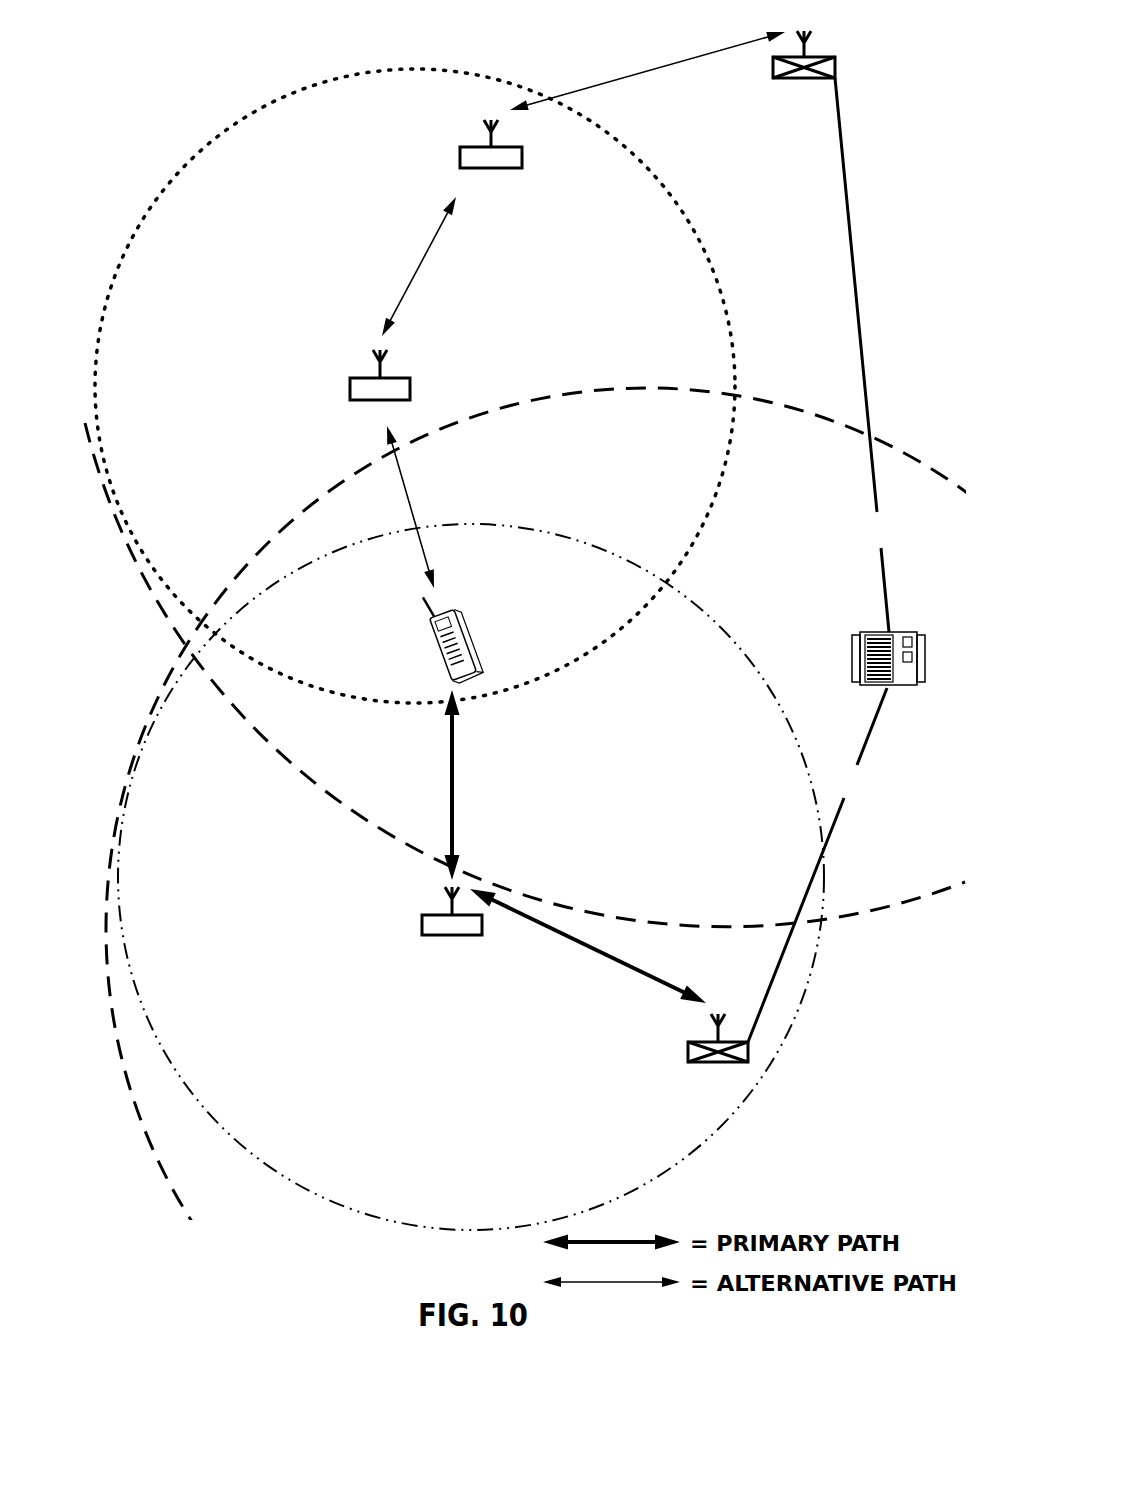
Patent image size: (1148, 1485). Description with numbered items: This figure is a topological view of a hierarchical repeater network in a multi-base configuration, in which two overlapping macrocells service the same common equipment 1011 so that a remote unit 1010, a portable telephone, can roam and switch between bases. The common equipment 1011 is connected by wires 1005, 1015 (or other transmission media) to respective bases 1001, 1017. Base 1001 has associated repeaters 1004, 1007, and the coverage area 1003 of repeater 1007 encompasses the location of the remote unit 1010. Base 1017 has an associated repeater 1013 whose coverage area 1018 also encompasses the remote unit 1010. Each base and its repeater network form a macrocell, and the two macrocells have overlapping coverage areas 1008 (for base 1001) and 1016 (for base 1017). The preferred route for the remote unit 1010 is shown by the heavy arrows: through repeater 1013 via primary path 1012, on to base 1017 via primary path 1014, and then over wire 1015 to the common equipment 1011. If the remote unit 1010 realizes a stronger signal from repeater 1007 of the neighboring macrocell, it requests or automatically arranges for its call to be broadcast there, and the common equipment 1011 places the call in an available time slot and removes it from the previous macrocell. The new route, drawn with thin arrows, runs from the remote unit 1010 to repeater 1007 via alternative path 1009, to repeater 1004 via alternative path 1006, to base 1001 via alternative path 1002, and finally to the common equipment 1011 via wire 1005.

The base 1001 is at (836, 62).
The alternative path 1002 is at (695, 46).
The coverage area 1003 is at (243, 117).
The repeater 1004 is at (462, 145).
The wire 1005 is at (851, 201).
The alternative path 1006 is at (410, 280).
The repeater 1007 is at (352, 388).
The coverage area 1008 is at (760, 405).
The alternative path 1009 is at (418, 518).
The remote unit 1010 is at (477, 656).
The common equipment 1011 is at (853, 650).
The primary path 1012 is at (456, 786).
The repeater 1013 is at (424, 925).
The primary path 1014 is at (602, 955).
The wire 1015 is at (839, 817).
The coverage area 1016 is at (855, 906).
The base 1017 is at (690, 1052).
The coverage area 1018 is at (750, 1098).